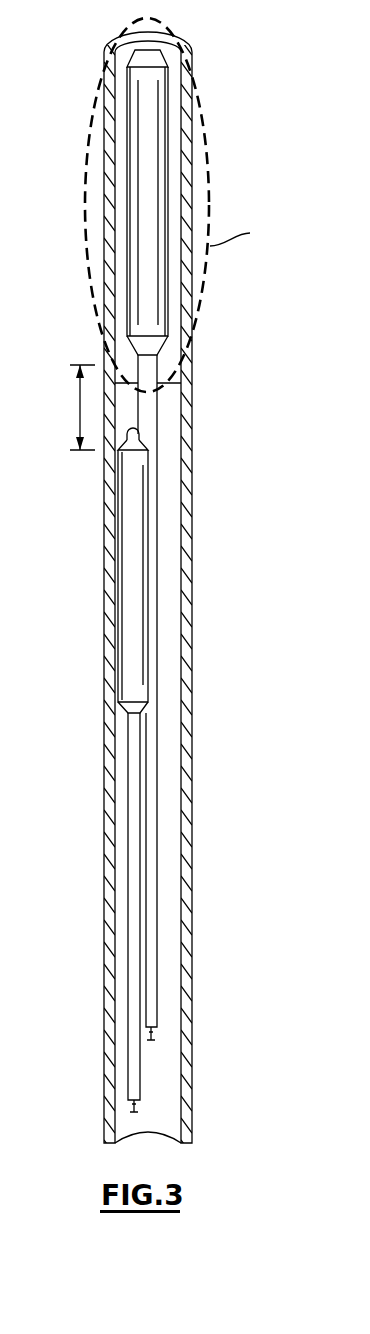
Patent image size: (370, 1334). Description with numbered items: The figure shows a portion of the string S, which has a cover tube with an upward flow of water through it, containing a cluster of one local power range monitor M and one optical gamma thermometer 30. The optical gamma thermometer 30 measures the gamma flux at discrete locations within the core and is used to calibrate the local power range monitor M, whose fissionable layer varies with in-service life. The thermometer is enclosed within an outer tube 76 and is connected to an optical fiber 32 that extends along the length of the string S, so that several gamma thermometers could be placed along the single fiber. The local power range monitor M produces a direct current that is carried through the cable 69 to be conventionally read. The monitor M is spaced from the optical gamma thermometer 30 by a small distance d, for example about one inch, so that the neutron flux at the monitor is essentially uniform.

The optical gamma thermometer 30 is at (108, 193).
The outer tube 76 is at (127, 110).
The local power range monitor M is at (130, 592).
The optical fiber 32 is at (139, 993).
The cable 69 is at (130, 1068).
The string S is at (72, 551).
The distance d is at (82, 407).